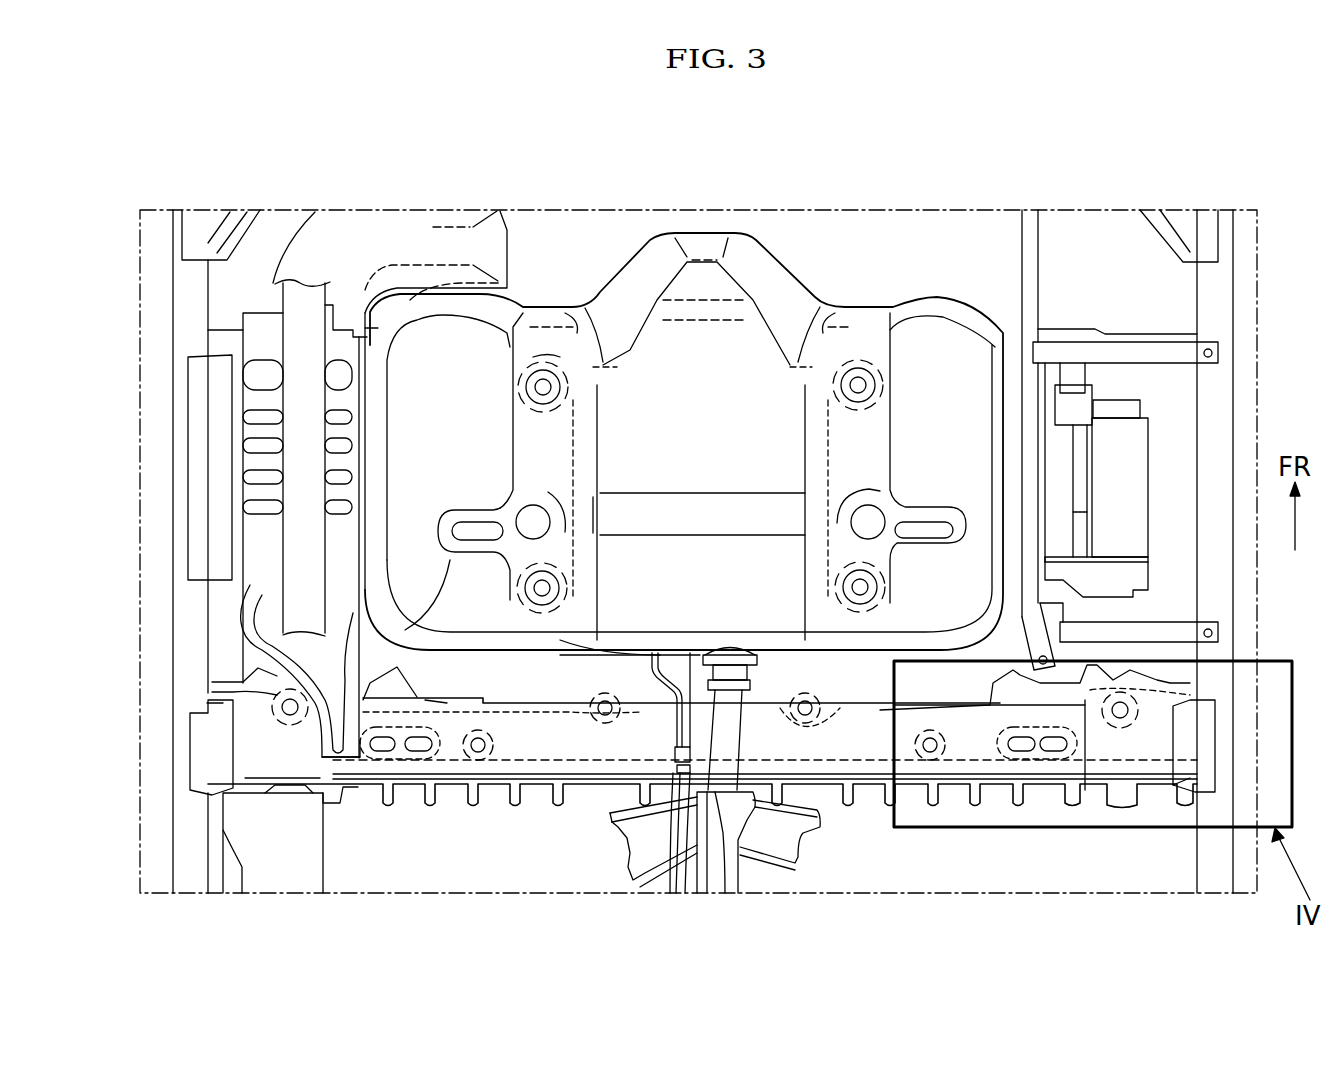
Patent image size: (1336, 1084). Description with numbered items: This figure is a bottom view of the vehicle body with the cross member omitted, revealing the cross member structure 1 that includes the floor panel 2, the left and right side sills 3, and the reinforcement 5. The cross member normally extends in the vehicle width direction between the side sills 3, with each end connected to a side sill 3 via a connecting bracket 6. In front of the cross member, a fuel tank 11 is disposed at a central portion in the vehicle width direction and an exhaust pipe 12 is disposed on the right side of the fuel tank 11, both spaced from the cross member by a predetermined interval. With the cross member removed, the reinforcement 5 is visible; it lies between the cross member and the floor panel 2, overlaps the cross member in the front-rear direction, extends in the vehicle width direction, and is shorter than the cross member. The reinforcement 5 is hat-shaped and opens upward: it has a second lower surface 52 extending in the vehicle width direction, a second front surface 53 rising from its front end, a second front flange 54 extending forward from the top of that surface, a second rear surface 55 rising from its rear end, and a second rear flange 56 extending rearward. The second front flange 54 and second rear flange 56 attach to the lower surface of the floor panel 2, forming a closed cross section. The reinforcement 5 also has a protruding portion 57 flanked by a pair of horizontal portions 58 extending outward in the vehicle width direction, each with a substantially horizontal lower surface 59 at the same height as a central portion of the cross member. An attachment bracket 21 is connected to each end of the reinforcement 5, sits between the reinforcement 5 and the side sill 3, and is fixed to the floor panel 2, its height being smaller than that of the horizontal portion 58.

The cross member structure 1 is at (1138, 190).
The floor panel 2 is at (393, 800).
The side sill 3 is at (190, 293).
The reinforcement 5 is at (523, 750).
The connecting bracket 6 is at (210, 745).
The fuel tank 11 is at (690, 345).
The exhaust pipe 12 is at (243, 405).
The attachment bracket 21 is at (262, 760).
The second lower surface 52 is at (577, 740).
The second front surface 53 is at (447, 703).
The second front flange 54 is at (378, 692).
The second rear surface 55 is at (495, 765).
The second rear flange 56 is at (345, 765).
The protruding portion 57 is at (640, 742).
The horizontal portion 58 is at (450, 752).
The lower surface 59 is at (1015, 760).